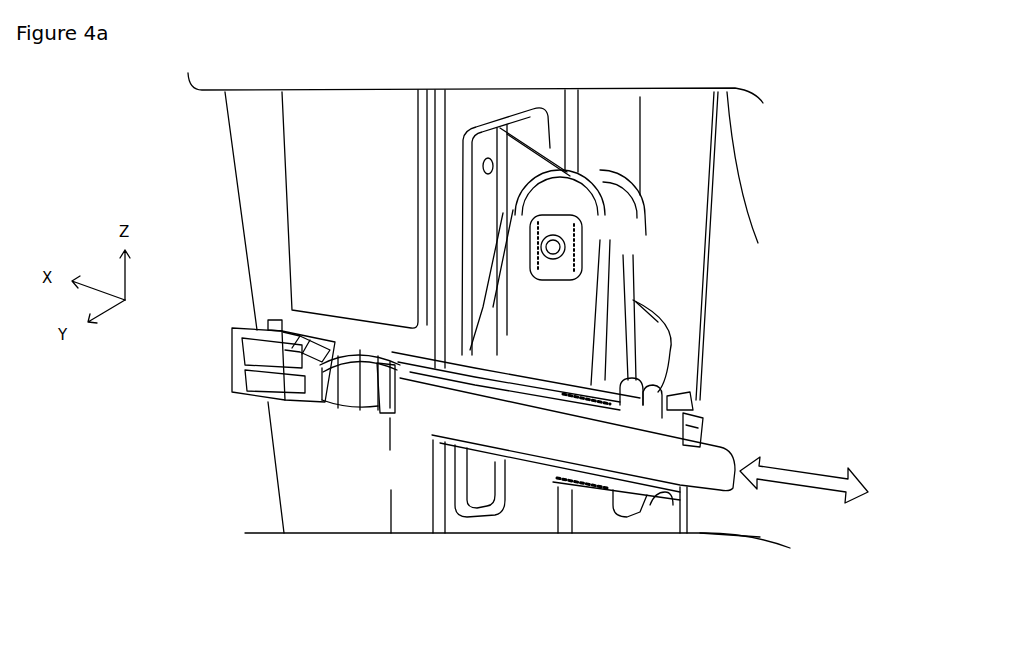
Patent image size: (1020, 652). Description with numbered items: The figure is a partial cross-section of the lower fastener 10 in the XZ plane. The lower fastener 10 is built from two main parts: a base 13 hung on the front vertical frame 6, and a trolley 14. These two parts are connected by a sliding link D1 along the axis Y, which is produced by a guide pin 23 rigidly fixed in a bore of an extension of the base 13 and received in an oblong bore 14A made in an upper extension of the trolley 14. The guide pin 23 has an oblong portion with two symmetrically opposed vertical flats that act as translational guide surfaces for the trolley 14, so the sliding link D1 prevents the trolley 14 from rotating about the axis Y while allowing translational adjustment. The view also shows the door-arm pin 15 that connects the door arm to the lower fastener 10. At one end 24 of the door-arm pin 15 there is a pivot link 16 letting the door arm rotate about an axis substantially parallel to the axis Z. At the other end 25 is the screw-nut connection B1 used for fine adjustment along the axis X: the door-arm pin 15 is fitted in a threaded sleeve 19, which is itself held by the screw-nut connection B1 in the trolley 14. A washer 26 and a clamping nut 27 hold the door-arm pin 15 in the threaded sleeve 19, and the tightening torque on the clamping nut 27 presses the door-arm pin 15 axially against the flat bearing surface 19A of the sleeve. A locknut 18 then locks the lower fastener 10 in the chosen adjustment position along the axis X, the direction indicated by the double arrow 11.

The front vertical frame 6 is at (460, 108).
The lower fastener 10 is at (772, 276).
The adjustment direction 11 is at (817, 496).
The base 13 is at (538, 137).
The trolley 14 is at (512, 300).
The oblong bore 14A is at (578, 222).
The door-arm pin 15 is at (497, 415).
The pivot link 16 is at (352, 385).
The locknut 18 is at (637, 397).
The threaded sleeve 19 is at (593, 480).
The flat bearing surface 19A is at (432, 433).
The guide pin 23 is at (577, 272).
The end 24 is at (264, 407).
The other end 25 is at (712, 512).
The washer 26 is at (703, 418).
The clamping nut 27 is at (733, 447).
The screw-nut connection B1 is at (557, 487).
The sliding link D1 is at (530, 231).